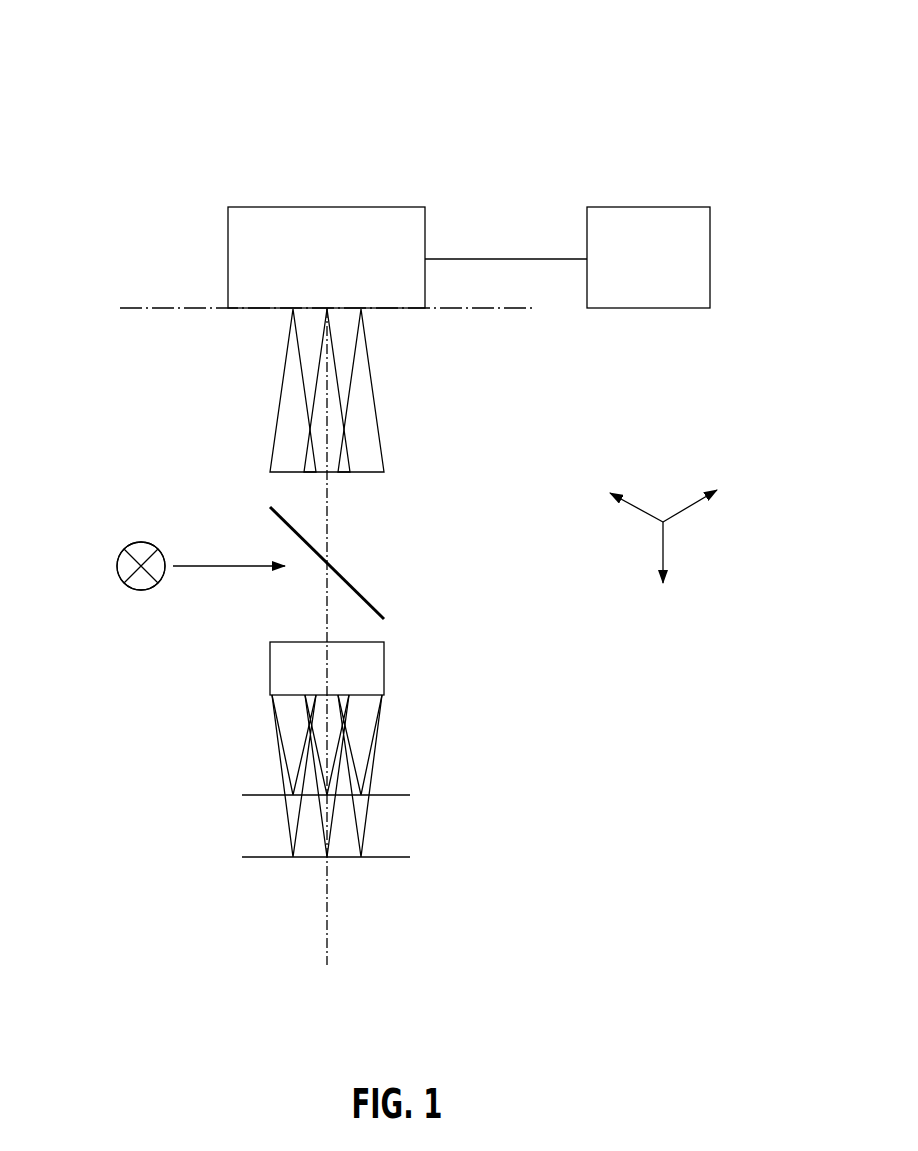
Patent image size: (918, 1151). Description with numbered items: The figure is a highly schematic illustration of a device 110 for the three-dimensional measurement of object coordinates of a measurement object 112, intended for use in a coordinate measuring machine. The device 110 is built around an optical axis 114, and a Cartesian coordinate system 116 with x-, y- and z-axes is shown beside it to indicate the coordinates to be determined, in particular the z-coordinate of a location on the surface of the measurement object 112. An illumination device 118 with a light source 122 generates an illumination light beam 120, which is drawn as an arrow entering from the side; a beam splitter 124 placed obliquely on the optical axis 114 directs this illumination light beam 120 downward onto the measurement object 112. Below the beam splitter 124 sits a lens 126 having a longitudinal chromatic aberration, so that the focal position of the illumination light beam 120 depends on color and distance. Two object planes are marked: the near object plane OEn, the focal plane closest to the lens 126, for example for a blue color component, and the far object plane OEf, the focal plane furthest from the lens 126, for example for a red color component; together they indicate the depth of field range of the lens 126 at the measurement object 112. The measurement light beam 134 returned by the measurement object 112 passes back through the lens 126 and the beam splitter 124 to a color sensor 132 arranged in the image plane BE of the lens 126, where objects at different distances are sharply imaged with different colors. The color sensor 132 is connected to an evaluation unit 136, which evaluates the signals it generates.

The device 110 is at (130, 125).
The measurement object 112 is at (242, 795).
The optical axis 114 is at (327, 918).
The Cartesian coordinate system 116 is at (737, 440).
The illumination device 118 is at (140, 541).
The illumination light beam 120 is at (222, 560).
The light source 122 is at (164, 520).
The beam splitter 124 is at (359, 581).
The lens 126 is at (384, 664).
The color sensor 132 is at (307, 273).
The measurement light beam 134 is at (385, 395).
The evaluation unit 136 is at (628, 273).
The image plane BE is at (128, 307).
The near object plane OEn is at (442, 795).
The far object plane OEf is at (440, 857).